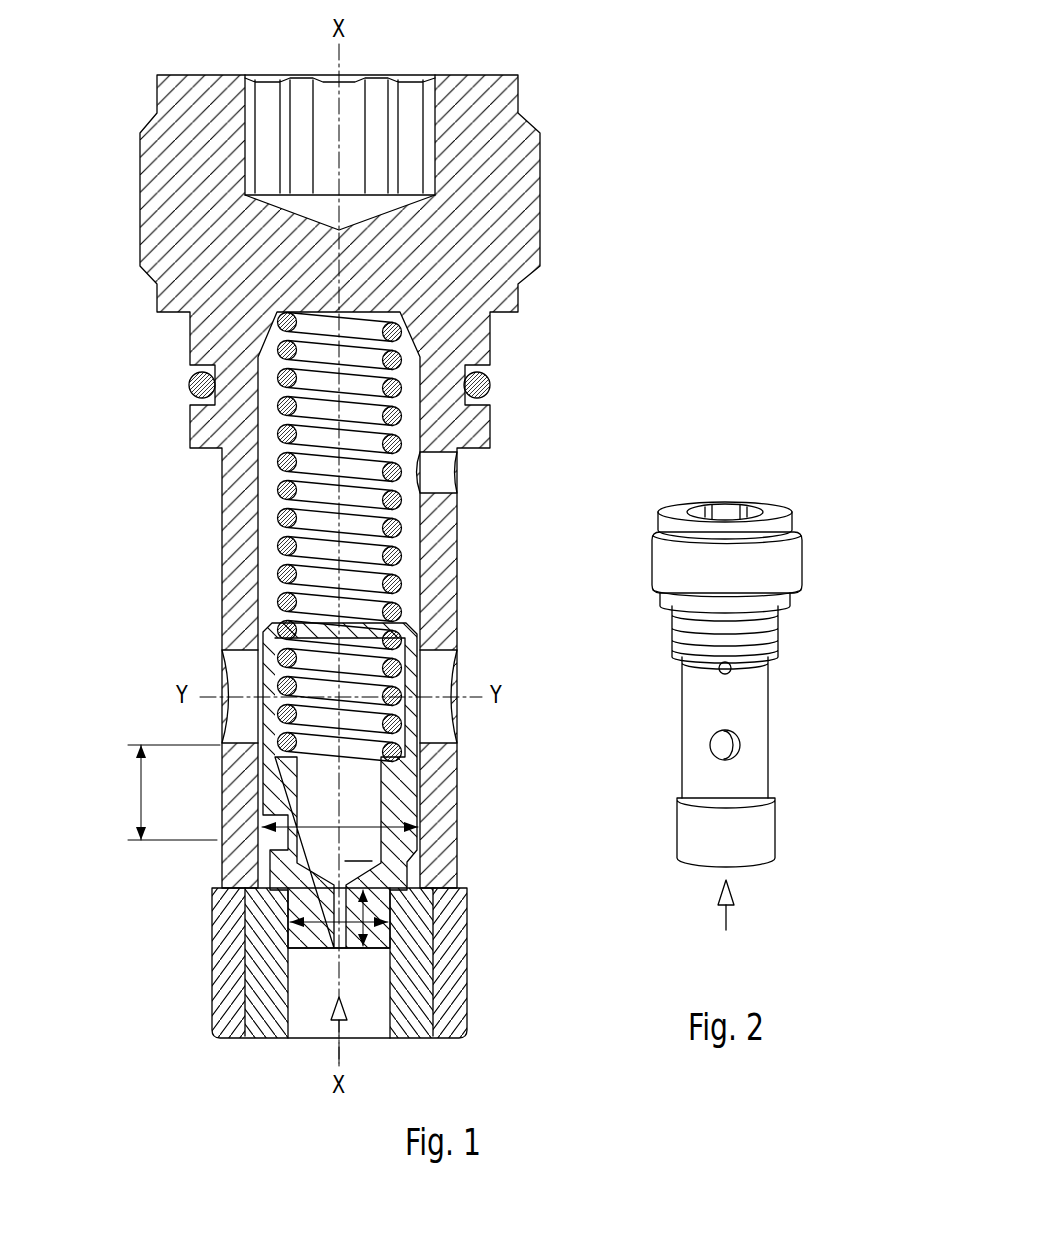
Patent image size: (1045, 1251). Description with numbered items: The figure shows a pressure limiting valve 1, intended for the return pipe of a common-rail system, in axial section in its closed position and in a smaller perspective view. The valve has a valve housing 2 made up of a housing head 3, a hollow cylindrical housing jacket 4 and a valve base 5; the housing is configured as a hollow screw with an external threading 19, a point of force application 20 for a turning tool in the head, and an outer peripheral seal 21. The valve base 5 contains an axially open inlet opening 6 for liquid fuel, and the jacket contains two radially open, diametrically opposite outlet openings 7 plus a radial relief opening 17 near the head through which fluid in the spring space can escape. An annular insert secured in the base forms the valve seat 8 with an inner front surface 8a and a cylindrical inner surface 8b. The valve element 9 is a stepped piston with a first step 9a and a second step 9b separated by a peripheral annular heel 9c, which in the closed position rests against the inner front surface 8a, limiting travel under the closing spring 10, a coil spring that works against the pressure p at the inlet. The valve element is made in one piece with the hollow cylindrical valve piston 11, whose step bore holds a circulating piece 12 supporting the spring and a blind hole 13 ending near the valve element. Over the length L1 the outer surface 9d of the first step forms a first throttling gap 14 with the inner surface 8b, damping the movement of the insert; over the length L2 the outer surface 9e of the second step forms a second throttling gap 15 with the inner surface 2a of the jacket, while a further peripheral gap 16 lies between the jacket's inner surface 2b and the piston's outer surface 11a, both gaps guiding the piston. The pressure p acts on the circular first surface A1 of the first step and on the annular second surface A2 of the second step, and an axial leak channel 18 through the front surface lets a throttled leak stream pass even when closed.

In FIG. 1, the pressure limiting valve 1 is at (573, 334).
In FIG. 2, the pressure limiting valve 1 is at (644, 767).
In FIG. 1, the valve housing 2 is at (342, 494).
In FIG. 2, the valve housing 2 is at (748, 656).
In FIG. 1, the inner surface of the housing jacket 2a is at (485, 765).
In FIG. 1, the inner surface of the housing jacket 2b is at (215, 559).
In FIG. 1, the housing head 3 is at (552, 149).
In FIG. 2, the housing head 3 is at (817, 540).
In FIG. 1, the housing jacket 4 is at (493, 514).
In FIG. 2, the housing jacket 4 is at (763, 727).
In FIG. 1, the valve base 5 is at (378, 963).
In FIG. 2, the valve base 5 is at (761, 832).
In FIG. 1, the inlet opening 6 is at (374, 1057).
In FIG. 1, the outlet opening 7 is at (358, 696).
In FIG. 2, the outlet opening 7 is at (777, 751).
In FIG. 1, the valve seat 8 is at (394, 963).
In FIG. 1, the inner front surface of the valve seat 8a is at (496, 856).
In FIG. 1, the inner surface of the valve seat 8b is at (332, 969).
In FIG. 1, the valve element 9 is at (195, 870).
In FIG. 1, the first step 9a is at (214, 933).
In FIG. 1, the second step 9b is at (206, 884).
In FIG. 1, the annular heel 9c is at (477, 871).
In FIG. 1, the outer surface of the first step 9d is at (214, 967).
In FIG. 1, the outer surface of the second step 9e is at (490, 795).
In FIG. 1, the closing spring 10 is at (417, 537).
In FIG. 1, the valve piston 11 is at (409, 783).
In FIG. 1, the outer surface of the valve piston 11a is at (213, 620).
In FIG. 1, the circulating piece 12 is at (220, 726).
In FIG. 1, the blind hole 13 is at (340, 814).
In FIG. 1, the throttling gap 14 is at (210, 972).
In FIG. 1, the second throttling gap 15 is at (508, 729).
In FIG. 1, the peripheral gap 16 is at (508, 608).
In FIG. 1, the relief opening 17 is at (488, 468).
In FIG. 2, the relief opening 17 is at (786, 676).
In FIG. 1, the leak channel 18 is at (188, 1061).
In FIG. 1, the external threading 19 is at (572, 202).
In FIG. 2, the external threading 19 is at (626, 540).
In FIG. 1, the point of force application 20 is at (345, 122).
In FIG. 2, the point of force application 20 is at (729, 479).
In FIG. 1, the peripheral seal 21 is at (374, 400).
In FIG. 1, the first pressure surface A1 is at (473, 995).
In FIG. 1, the second pressure surface A2 is at (226, 775).
In FIG. 1, the length of the first step L1 is at (420, 919).
In FIG. 1, the length of the second throttling gap L2 is at (151, 792).
In FIG. 1, the pressure p is at (309, 1048).
In FIG. 2, the pressure p is at (745, 912).